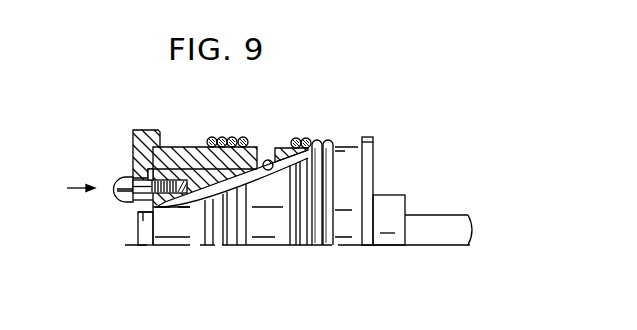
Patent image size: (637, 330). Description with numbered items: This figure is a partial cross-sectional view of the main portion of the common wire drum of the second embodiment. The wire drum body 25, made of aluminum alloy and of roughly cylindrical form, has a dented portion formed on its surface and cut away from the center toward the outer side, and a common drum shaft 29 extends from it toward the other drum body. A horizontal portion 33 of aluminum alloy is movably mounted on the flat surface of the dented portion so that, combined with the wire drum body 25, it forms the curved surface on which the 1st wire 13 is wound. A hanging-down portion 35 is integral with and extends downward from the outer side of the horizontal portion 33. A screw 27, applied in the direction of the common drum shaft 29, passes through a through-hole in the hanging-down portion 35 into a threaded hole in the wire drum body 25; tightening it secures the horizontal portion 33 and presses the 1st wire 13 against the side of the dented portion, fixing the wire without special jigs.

The hanging-down portion 35 is at (133, 152).
The horizontal portion 33 is at (195, 156).
The wire drum body 25 is at (283, 149).
The 1st wire 13 is at (306, 141).
The common drum shaft 29 is at (440, 225).
The screw 27 is at (117, 198).